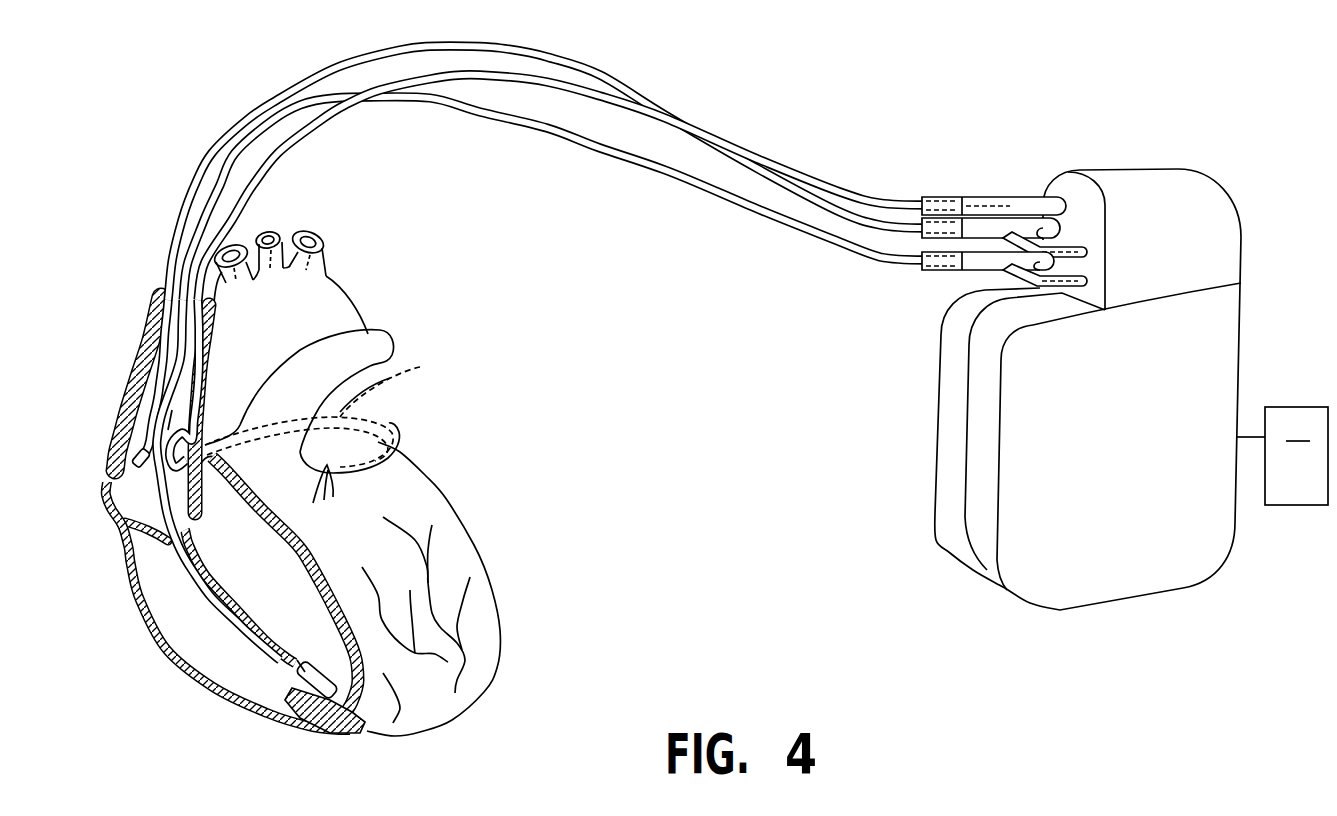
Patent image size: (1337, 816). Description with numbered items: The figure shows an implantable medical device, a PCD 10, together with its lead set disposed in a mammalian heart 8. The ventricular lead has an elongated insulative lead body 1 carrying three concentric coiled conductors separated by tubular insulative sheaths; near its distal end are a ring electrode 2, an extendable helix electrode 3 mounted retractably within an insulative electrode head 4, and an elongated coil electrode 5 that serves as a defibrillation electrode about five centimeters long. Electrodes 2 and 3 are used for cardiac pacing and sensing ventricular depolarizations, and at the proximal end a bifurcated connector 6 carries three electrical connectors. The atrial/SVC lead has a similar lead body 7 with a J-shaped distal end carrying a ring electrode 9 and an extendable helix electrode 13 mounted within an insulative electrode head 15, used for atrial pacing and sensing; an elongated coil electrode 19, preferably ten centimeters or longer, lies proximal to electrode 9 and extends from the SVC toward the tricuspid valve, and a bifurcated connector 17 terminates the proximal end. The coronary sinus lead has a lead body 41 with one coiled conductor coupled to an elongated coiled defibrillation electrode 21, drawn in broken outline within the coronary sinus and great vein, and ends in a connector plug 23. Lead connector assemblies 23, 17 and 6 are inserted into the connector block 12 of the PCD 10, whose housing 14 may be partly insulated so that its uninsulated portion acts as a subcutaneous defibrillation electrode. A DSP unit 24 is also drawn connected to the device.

The lead body 1 is at (821, 238).
The ring electrode 2 is at (292, 667).
The extendable helix electrode 3 is at (343, 722).
The insulative electrode head 4 is at (303, 677).
The elongated coil electrode 5 is at (236, 616).
The bifurcated connector 6 is at (980, 262).
The lead body 7 is at (855, 220).
The mammalian heart 8 is at (430, 697).
The ring electrode 9 is at (136, 452).
The IMD 10 is at (1046, 380).
The connector block 12 is at (1153, 187).
The extendable helix electrode 13 is at (198, 417).
The housing 14 is at (1021, 562).
The insulative electrode head 15 is at (174, 418).
The bifurcated connector 17 is at (1023, 235).
The elongated coil electrode 19 is at (157, 342).
The elongated coiled defibrillation electrode 21 is at (400, 372).
The connector plug 23 is at (985, 200).
The DSP unit 24 is at (1282, 456).
The lead body 41 is at (787, 176).